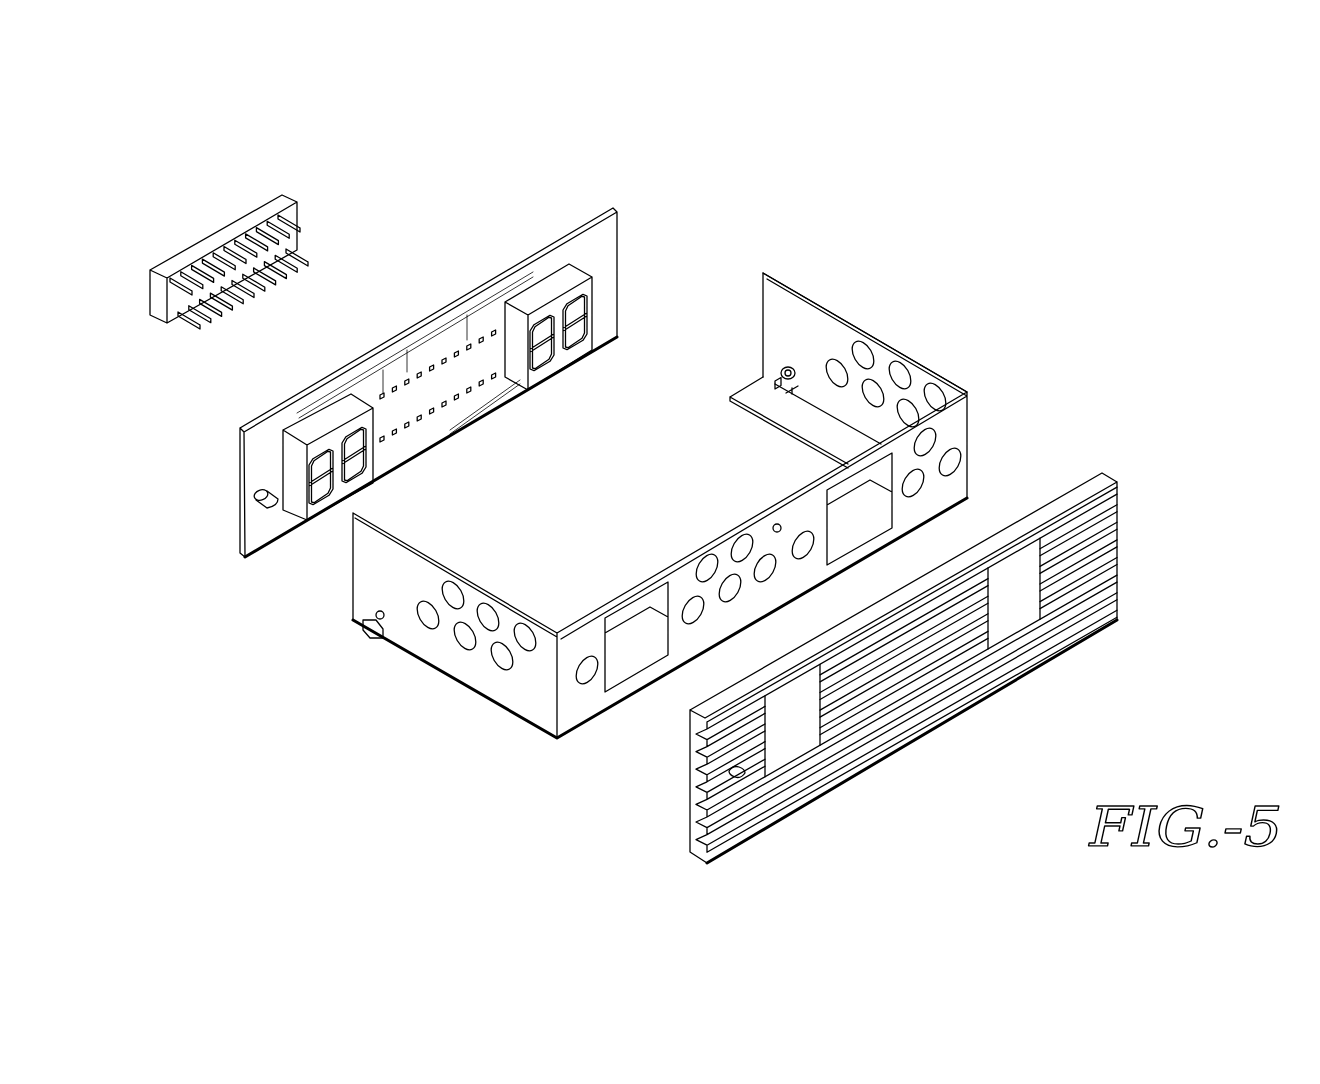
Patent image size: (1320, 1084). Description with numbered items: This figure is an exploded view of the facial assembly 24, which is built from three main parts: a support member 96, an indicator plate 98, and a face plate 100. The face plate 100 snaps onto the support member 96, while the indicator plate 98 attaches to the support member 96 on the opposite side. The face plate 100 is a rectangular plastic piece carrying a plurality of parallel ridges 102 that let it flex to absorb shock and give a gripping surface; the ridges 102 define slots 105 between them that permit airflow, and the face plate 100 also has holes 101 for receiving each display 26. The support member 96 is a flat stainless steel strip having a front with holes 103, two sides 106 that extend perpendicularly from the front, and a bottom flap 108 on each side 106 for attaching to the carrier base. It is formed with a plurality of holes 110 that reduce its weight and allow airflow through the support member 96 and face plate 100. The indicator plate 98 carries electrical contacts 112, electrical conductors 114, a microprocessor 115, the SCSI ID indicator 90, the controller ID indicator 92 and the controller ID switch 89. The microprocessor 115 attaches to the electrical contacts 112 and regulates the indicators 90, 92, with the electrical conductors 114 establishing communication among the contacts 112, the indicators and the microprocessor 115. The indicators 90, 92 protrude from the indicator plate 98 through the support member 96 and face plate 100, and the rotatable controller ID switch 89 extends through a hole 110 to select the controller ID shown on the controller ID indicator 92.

The facial assembly 24 is at (822, 212).
The display 26 is at (562, 275).
The controller ID switch 89 is at (260, 500).
The SCSI ID indicator 90 is at (588, 292).
The controller ID indicator 92 is at (337, 430).
The support member 96 is at (967, 410).
The indicator plate 98 is at (613, 208).
The face plate 100 is at (1105, 472).
The holes 101 is at (1027, 628).
The ridges 102 is at (698, 830).
The holes 103 is at (880, 525).
The slots 105 is at (1118, 530).
The sides 106 is at (826, 304).
The bottom flap 108 is at (750, 392).
The holes 110 is at (953, 462).
The electrical contacts 112 is at (453, 392).
The electrical conductors 114 is at (477, 408).
The microprocessor 115 is at (273, 193).